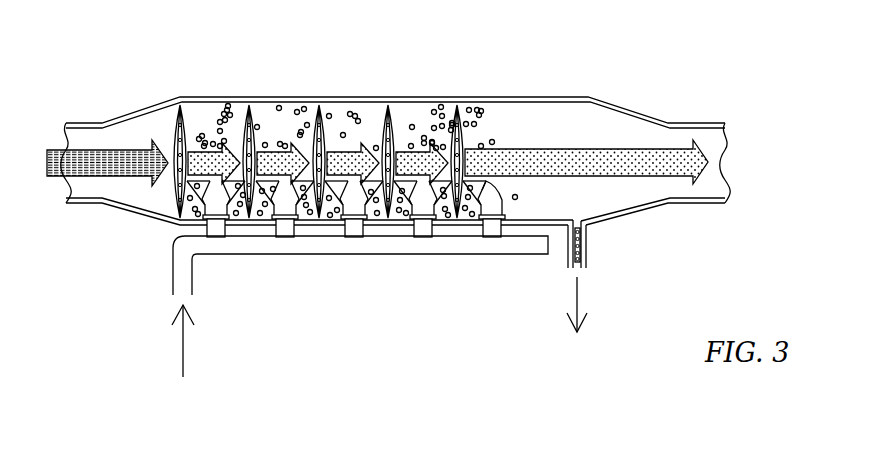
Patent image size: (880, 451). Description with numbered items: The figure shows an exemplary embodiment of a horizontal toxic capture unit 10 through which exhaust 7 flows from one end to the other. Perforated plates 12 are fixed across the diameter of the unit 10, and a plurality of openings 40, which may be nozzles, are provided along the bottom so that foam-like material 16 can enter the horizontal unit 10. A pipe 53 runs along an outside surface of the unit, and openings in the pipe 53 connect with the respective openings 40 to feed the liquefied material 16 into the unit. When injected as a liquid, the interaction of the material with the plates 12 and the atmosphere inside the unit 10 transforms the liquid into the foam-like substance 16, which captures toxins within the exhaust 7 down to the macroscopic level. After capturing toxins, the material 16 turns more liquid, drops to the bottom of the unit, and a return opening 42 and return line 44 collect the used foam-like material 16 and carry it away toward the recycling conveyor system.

The exhaust 7 is at (104, 157).
The horizontal toxic capture unit 10 is at (522, 97).
The perforated plates 12 is at (174, 126).
The foam-like material 16 is at (201, 127).
The openings 40 is at (493, 205).
The return opening 42 is at (578, 222).
The return line 44 is at (587, 248).
The pipe 53 is at (237, 256).